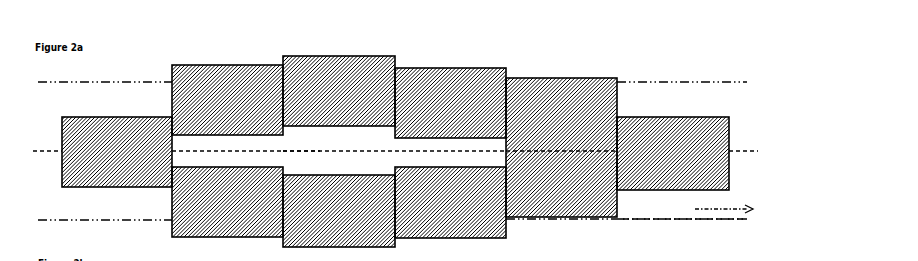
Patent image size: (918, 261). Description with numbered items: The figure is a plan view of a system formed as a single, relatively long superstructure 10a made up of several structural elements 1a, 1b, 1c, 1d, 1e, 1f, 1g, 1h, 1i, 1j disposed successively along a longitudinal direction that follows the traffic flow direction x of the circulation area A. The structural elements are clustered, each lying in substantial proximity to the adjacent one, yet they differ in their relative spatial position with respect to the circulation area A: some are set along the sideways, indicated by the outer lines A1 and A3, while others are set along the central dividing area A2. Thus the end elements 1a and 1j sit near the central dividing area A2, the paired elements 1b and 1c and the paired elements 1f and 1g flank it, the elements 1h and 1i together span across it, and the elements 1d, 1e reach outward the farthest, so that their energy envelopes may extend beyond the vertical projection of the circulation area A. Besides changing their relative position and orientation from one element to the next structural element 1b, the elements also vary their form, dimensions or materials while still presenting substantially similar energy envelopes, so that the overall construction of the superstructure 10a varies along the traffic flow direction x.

The superstructure 10a is at (44, 123).
The structural element 1a is at (459, 150).
The next structural element 1b is at (459, 150).
The structural element 1c is at (227, 153).
The structural element 1d is at (459, 146).
The structural element 1e is at (339, 162).
The structural element 1f is at (459, 150).
The structural element 1g is at (450, 158).
The structural element 1h is at (459, 150).
The structural element 1i is at (626, 227).
The structural element 1j is at (459, 150).
The rotation axis A is at (700, 116).
The outer envelope line A1 is at (105, 166).
The center axis line A2 is at (301, 153).
The outer envelope line A3 is at (682, 235).
The traffic flow direction x is at (737, 209).